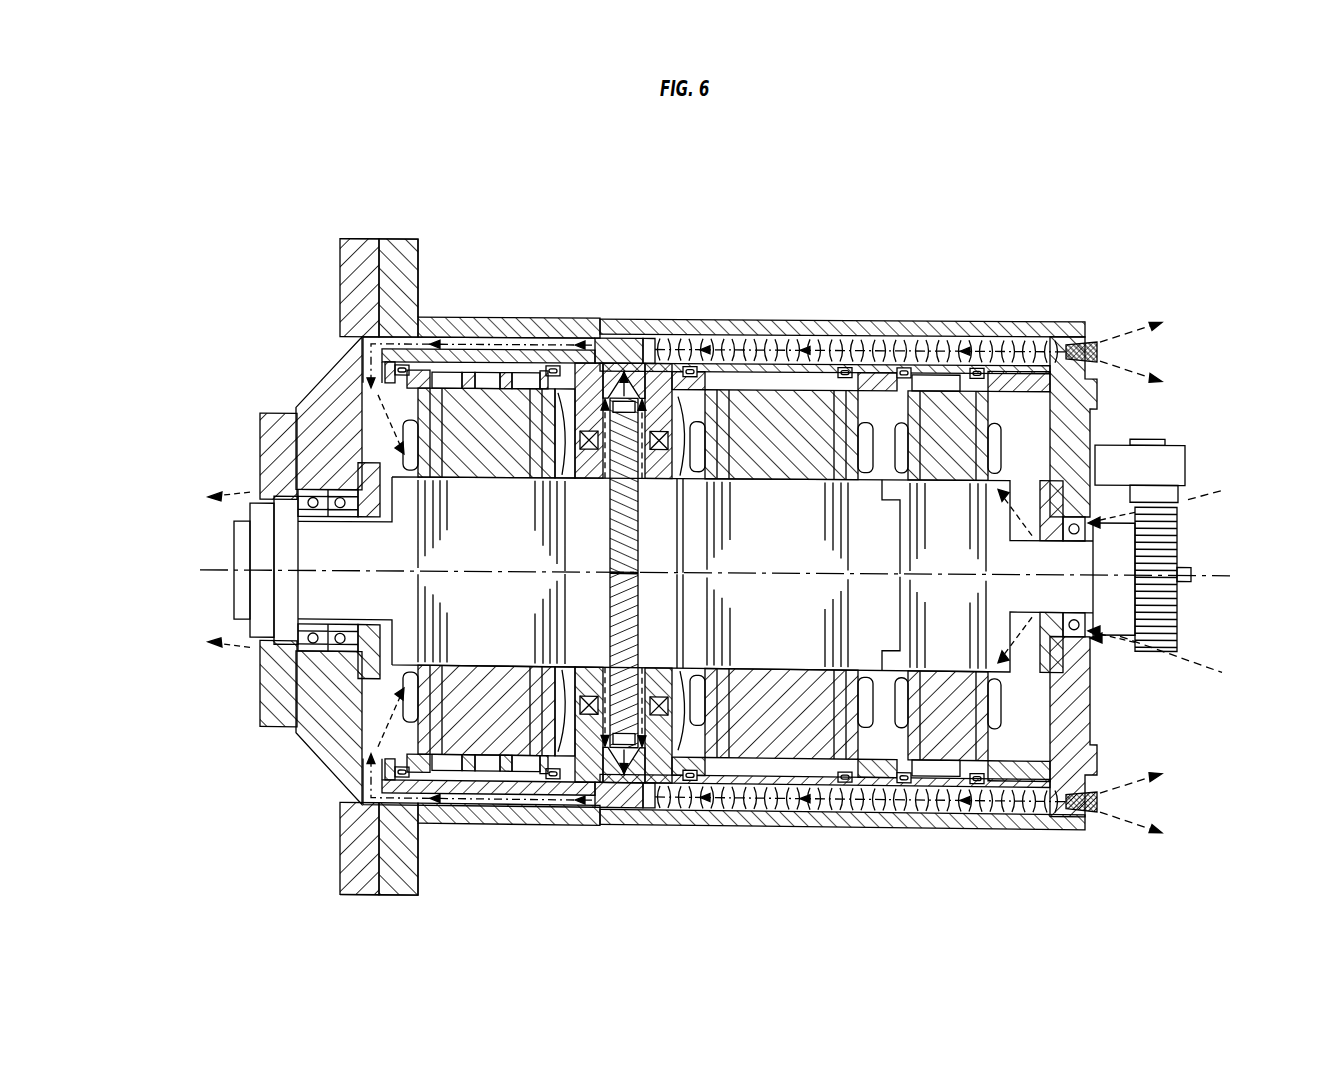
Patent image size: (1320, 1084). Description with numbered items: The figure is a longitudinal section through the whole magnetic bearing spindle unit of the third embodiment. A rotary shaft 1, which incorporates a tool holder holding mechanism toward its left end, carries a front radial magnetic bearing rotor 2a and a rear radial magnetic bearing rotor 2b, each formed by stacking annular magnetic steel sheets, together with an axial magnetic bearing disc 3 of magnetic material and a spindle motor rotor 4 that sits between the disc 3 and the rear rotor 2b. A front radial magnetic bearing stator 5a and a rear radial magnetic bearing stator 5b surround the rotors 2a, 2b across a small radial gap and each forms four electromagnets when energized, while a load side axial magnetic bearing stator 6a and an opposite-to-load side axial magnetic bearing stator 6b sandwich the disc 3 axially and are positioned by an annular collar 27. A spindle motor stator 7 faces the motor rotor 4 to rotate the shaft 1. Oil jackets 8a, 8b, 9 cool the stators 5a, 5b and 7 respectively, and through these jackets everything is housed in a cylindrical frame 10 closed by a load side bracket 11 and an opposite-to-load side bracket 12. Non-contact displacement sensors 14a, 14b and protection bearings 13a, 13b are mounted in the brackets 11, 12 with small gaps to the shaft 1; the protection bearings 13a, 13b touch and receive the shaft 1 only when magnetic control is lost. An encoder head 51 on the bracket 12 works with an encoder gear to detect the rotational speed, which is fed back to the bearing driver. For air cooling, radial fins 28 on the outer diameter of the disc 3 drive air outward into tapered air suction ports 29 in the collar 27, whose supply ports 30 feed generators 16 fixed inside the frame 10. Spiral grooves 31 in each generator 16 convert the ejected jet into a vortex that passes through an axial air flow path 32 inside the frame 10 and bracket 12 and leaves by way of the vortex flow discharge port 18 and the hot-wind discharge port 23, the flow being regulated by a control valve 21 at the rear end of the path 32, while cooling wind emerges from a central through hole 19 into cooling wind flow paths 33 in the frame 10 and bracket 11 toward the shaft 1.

The rotary shaft 1 is at (235, 533).
The front radial magnetic bearing rotor 2a is at (322, 380).
The rear radial magnetic bearing rotor 2b is at (990, 410).
The axial magnetic bearing disc 3 is at (585, 395).
The spindle motor rotor 4 is at (795, 495).
The front radial magnetic bearing stator 5a is at (470, 393).
The rear radial magnetic bearing stator 5b is at (950, 405).
The load side axial magnetic bearing stator 6a is at (560, 420).
The opposite-to-load side axial magnetic bearing stator 6b is at (700, 398).
The spindle motor stator 7 is at (830, 470).
The oil jacket 8a is at (493, 776).
The oil jacket 8b is at (905, 781).
The oil jacket 9 is at (745, 824).
The frame 10 is at (402, 239).
The load side bracket 11 is at (340, 268).
The opposite-to-load side bracket 12 is at (1060, 318).
The protection bearing 13a is at (260, 697).
The protection bearing 13b is at (1063, 642).
The non-contact displacement sensor 14a is at (362, 487).
The non-contact displacement sensor 14b is at (1085, 526).
The generator 16 is at (622, 336).
The vortex flow discharge port 18 is at (658, 336).
The through hole 19 is at (646, 336).
The control valve 21 is at (1098, 347).
The hot-wind discharge port 23 is at (1080, 340).
The annular collar 27 is at (618, 336).
The radial fins 28 is at (625, 700).
The air suction port 29 is at (600, 393).
The supply port 30 is at (660, 398).
The spiral grooves 31 is at (634, 336).
The air flow path 32 is at (765, 336).
The cooling wind flow path 33 is at (363, 344).
The encoder head 51 is at (1186, 458).